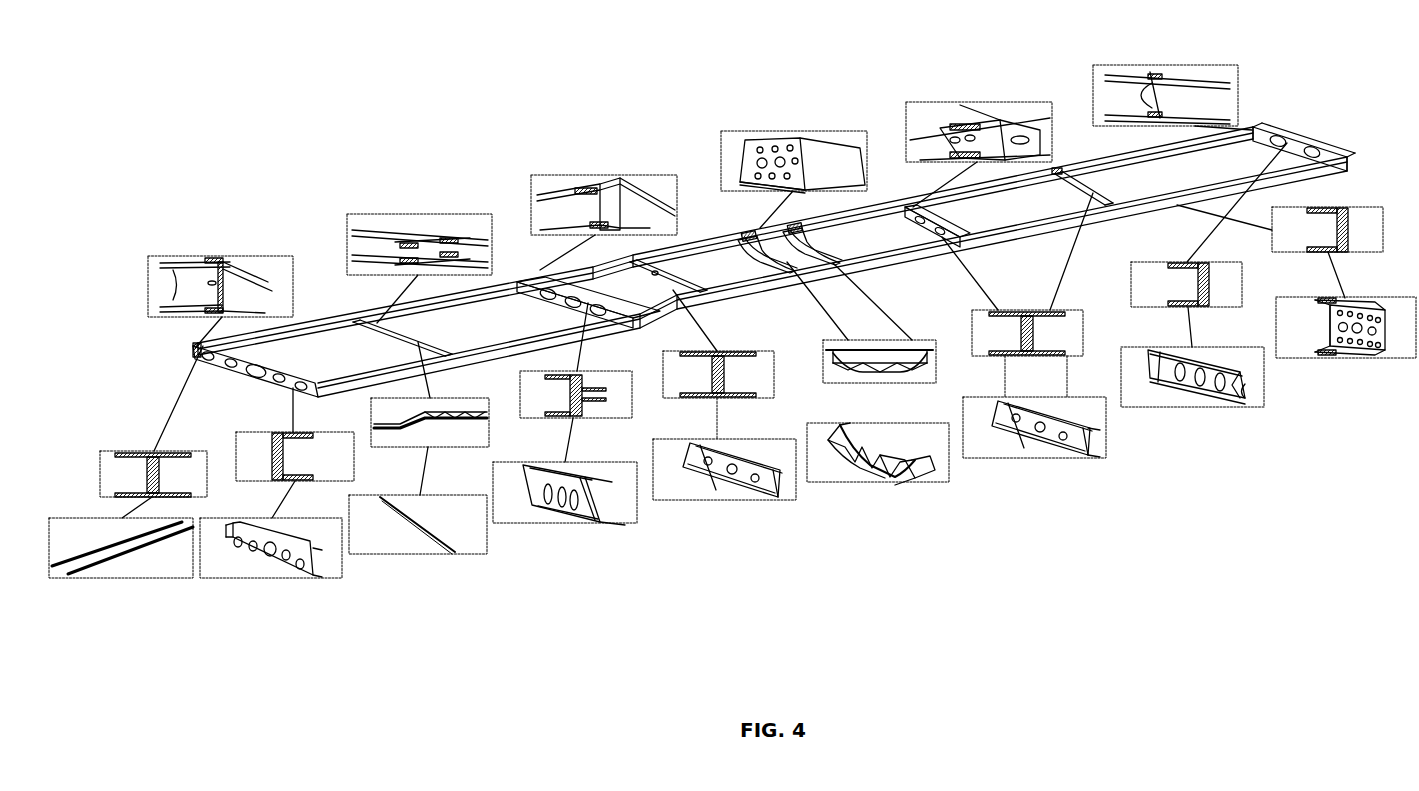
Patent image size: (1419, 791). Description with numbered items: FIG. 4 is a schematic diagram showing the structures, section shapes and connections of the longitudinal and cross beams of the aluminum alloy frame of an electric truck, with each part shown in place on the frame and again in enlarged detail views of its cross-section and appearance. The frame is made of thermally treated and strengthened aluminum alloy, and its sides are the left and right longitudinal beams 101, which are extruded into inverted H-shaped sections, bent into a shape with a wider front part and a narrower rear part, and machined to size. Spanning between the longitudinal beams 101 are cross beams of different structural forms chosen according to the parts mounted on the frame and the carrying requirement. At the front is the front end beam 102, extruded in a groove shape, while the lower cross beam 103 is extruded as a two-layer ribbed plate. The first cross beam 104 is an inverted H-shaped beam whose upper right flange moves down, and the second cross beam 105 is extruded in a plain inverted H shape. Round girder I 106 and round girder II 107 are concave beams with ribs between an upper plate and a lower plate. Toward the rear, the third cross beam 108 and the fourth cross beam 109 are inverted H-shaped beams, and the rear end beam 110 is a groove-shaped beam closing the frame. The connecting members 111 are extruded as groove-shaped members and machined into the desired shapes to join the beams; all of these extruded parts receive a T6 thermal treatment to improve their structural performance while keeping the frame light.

The left and right longitudinal beams 101 is at (128, 481).
The front end beam 102 is at (277, 502).
The lower cross beam 103 is at (419, 466).
The first cross beam 104 is at (565, 431).
The second cross beam 105 is at (724, 413).
The round girder I 106 is at (868, 390).
The round girder II 107 is at (906, 391).
The third cross beam 108 is at (1024, 343).
The fourth cross beam 109 is at (1085, 461).
The rear end beam 110 is at (1204, 293).
The connecting member 111 is at (1297, 300).